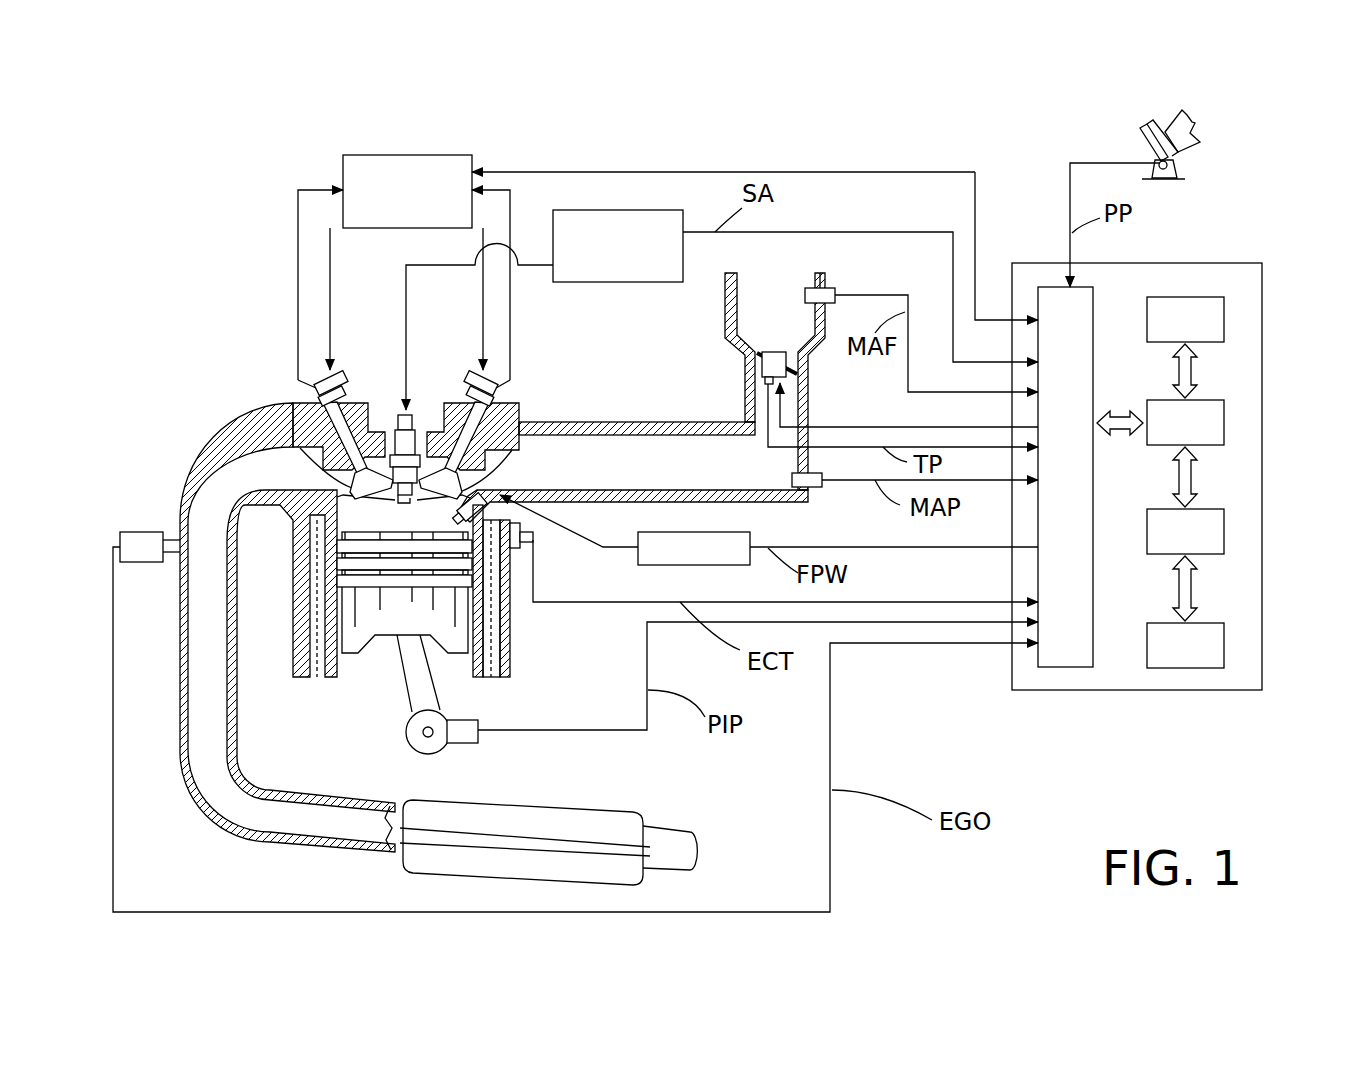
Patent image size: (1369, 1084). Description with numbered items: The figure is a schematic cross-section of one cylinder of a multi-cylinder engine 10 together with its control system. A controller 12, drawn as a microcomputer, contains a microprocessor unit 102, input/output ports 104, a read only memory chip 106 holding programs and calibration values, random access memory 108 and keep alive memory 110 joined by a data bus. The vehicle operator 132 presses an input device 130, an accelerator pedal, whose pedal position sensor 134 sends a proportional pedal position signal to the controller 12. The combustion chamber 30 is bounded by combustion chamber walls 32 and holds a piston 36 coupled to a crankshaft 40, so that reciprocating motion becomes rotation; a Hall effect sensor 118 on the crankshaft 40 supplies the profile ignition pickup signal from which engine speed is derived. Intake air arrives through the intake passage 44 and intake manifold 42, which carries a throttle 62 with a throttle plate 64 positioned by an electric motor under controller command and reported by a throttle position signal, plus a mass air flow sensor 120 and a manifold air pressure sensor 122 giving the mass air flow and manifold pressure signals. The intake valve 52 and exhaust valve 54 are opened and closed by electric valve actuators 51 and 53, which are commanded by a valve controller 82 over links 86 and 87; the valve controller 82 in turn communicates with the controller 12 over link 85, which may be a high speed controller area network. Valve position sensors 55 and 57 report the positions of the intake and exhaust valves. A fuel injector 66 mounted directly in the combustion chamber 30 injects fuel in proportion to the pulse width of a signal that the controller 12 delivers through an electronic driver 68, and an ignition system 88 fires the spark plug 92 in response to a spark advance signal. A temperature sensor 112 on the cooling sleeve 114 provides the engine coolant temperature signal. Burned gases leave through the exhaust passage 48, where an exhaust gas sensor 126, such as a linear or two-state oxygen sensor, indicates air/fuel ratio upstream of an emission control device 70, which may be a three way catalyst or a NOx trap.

The engine 10 is at (215, 347).
The controller 12 is at (1252, 262).
The combustion chamber 30 is at (403, 512).
The combustion chamber walls 32 is at (337, 665).
The piston 36 is at (385, 620).
The crankshaft 40 is at (415, 748).
The intake manifold 42 is at (758, 326).
The intake passage 44 is at (687, 479).
The exhaust passage 48 is at (278, 484).
The electric valve actuator 51 is at (476, 378).
The intake valve 52 is at (455, 485).
The electric valve actuator 53 is at (345, 378).
The exhaust valve 54 is at (353, 483).
The valve position sensor 55 is at (498, 387).
The valve position sensor 57 is at (313, 387).
The throttle 62 is at (787, 358).
The throttle plate 64 is at (753, 360).
The fuel injector 66 is at (512, 523).
The electronic driver 68 is at (660, 565).
The emission control device 70 is at (603, 805).
The valve controller 82 is at (360, 155).
The link 85 is at (658, 172).
The link 86 is at (483, 313).
The link 87 is at (330, 305).
The ignition system 88 is at (575, 282).
The spark plug 92 is at (412, 415).
The microprocessor unit 102 is at (1227, 415).
The input/output ports 104 is at (1095, 295).
The read only memory chip 106 is at (1227, 318).
The random access memory 108 is at (1227, 530).
The keep alive memory 110 is at (1227, 645).
The temperature sensor 112 is at (530, 545).
The cooling sleeve 114 is at (495, 620).
The Hall effect sensor 118 is at (467, 747).
The mass air flow sensor 120 is at (828, 287).
The manifold air pressure sensor 122 is at (815, 487).
The exhaust gas sensor 126 is at (118, 534).
The input device 130 is at (1143, 138).
The vehicle operator 132 is at (1197, 122).
The pedal position sensor 134 is at (1178, 165).